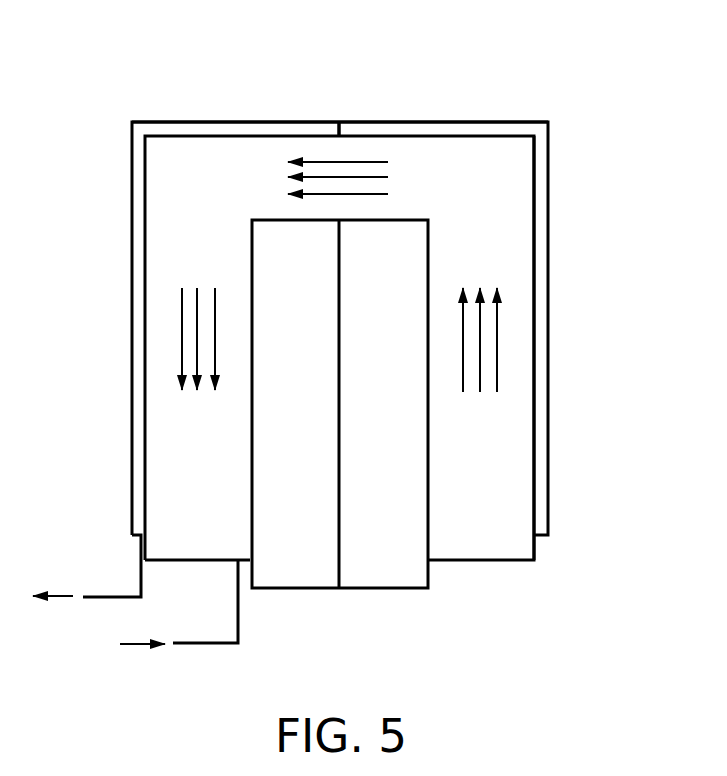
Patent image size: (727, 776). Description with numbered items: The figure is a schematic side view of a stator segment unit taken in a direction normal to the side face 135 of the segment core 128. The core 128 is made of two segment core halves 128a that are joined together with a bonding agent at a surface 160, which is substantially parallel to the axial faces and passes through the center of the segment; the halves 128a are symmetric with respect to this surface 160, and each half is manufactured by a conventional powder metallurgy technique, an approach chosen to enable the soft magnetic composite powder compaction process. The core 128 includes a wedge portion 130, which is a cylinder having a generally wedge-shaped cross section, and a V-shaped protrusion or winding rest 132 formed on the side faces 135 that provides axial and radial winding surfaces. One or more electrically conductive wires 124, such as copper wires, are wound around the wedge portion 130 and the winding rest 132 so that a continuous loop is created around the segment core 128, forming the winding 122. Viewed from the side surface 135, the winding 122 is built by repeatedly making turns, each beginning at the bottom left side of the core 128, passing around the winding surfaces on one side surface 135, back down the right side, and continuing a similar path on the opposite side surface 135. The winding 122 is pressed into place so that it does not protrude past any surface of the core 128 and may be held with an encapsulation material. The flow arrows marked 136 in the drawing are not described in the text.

The winding 122 is at (523, 459).
The electrically conductive wire 124 is at (94, 600).
The stator segment core 128 is at (122, 120).
The segment core half 128a is at (131, 268).
The wedge portion 130 is at (493, 128).
The winding rest 132 is at (389, 573).
The side face 135 is at (371, 130).
The air flow 136 is at (497, 348).
The joining surface 160 is at (343, 355).